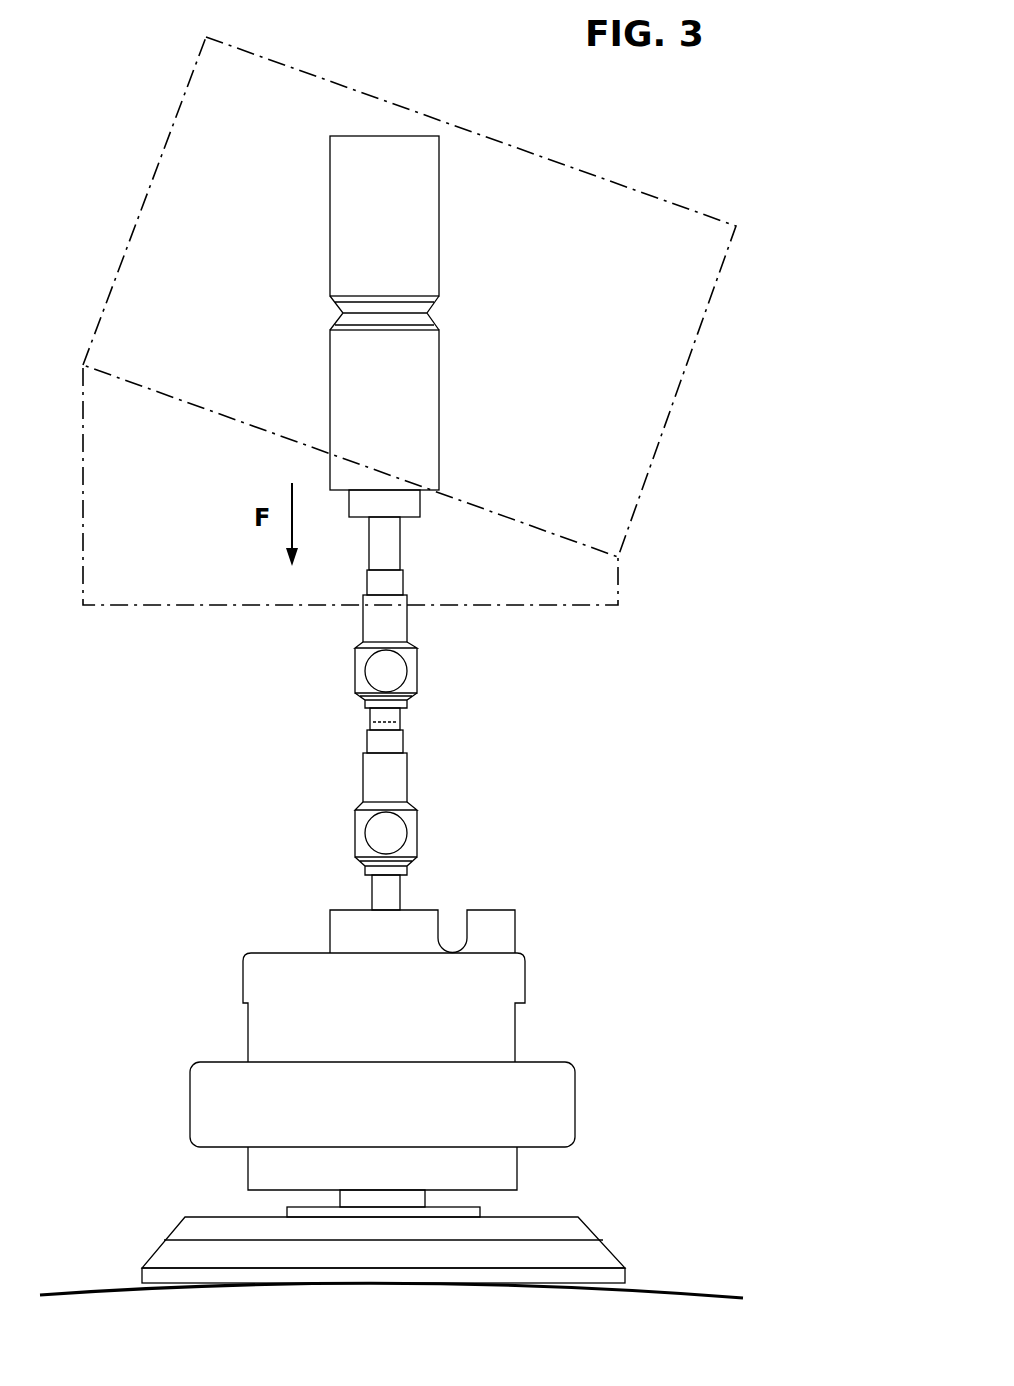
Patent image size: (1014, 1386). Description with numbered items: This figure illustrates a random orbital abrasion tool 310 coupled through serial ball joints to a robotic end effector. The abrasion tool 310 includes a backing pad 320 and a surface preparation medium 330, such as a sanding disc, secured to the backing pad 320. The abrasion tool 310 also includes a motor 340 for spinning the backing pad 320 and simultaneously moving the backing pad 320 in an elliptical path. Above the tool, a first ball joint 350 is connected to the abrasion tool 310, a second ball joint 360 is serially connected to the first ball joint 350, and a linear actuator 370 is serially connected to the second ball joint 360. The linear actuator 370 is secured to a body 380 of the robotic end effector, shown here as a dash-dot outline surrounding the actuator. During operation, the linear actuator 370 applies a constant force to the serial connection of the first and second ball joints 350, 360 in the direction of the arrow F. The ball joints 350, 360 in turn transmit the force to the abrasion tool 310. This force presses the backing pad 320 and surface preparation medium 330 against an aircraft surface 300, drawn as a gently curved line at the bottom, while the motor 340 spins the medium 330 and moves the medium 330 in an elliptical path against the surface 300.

The aircraft surface 300 is at (735, 1295).
The random orbital abrasion tool 310 is at (500, 910).
The backing pad 320 is at (607, 1248).
The surface preparation medium 330 is at (627, 1275).
The motor 340 is at (543, 1062).
The first ball joint 350 is at (413, 805).
The second ball joint 360 is at (413, 647).
The linear actuator 370 is at (441, 377).
The body 380 is at (666, 430).